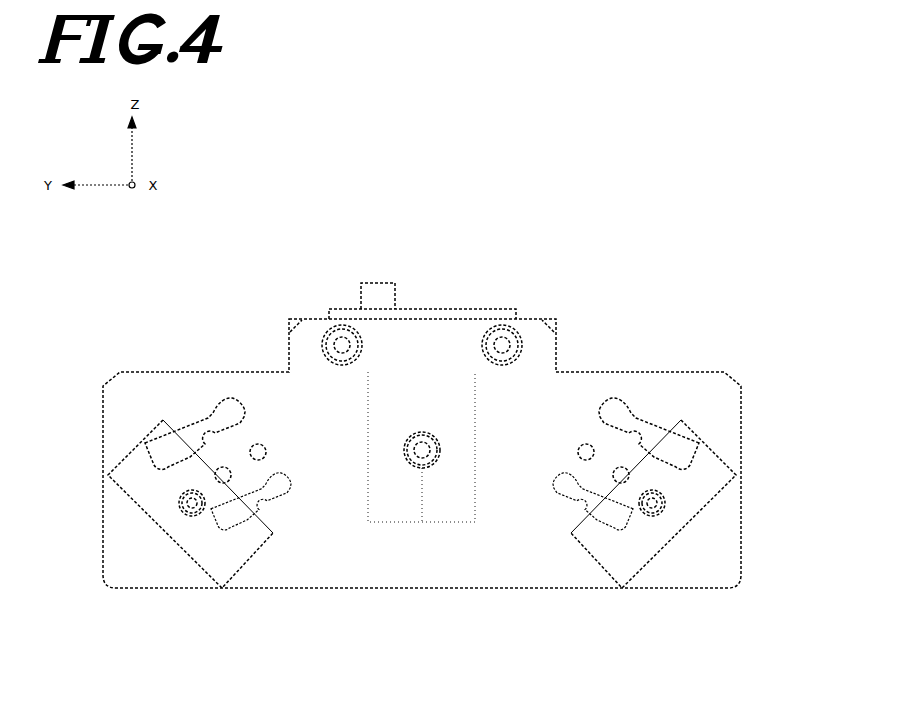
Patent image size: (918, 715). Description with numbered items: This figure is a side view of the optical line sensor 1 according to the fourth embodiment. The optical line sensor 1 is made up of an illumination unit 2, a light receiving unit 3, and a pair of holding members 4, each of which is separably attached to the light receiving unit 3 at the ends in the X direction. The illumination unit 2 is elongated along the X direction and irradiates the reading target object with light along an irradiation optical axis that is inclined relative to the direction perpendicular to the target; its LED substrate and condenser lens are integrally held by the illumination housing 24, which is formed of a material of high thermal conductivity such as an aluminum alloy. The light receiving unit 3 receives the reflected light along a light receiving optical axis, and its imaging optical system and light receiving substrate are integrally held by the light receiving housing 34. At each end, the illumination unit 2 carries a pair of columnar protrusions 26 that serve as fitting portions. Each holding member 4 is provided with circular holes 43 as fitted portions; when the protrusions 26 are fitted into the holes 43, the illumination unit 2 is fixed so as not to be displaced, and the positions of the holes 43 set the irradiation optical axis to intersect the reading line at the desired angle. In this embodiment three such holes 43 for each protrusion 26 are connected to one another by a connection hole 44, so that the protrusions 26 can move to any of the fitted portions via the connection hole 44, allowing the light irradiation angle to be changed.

The optical line sensor 1 is at (459, 182).
The illumination unit 2 is at (103, 447).
The light receiving unit 3 is at (474, 298).
The holding member 4 is at (426, 600).
The illumination housing 24 is at (138, 443).
The protrusion 26 is at (216, 534).
The light receiving housing 34 is at (417, 307).
The hole 43 is at (287, 491).
The connection hole 44 is at (283, 493).